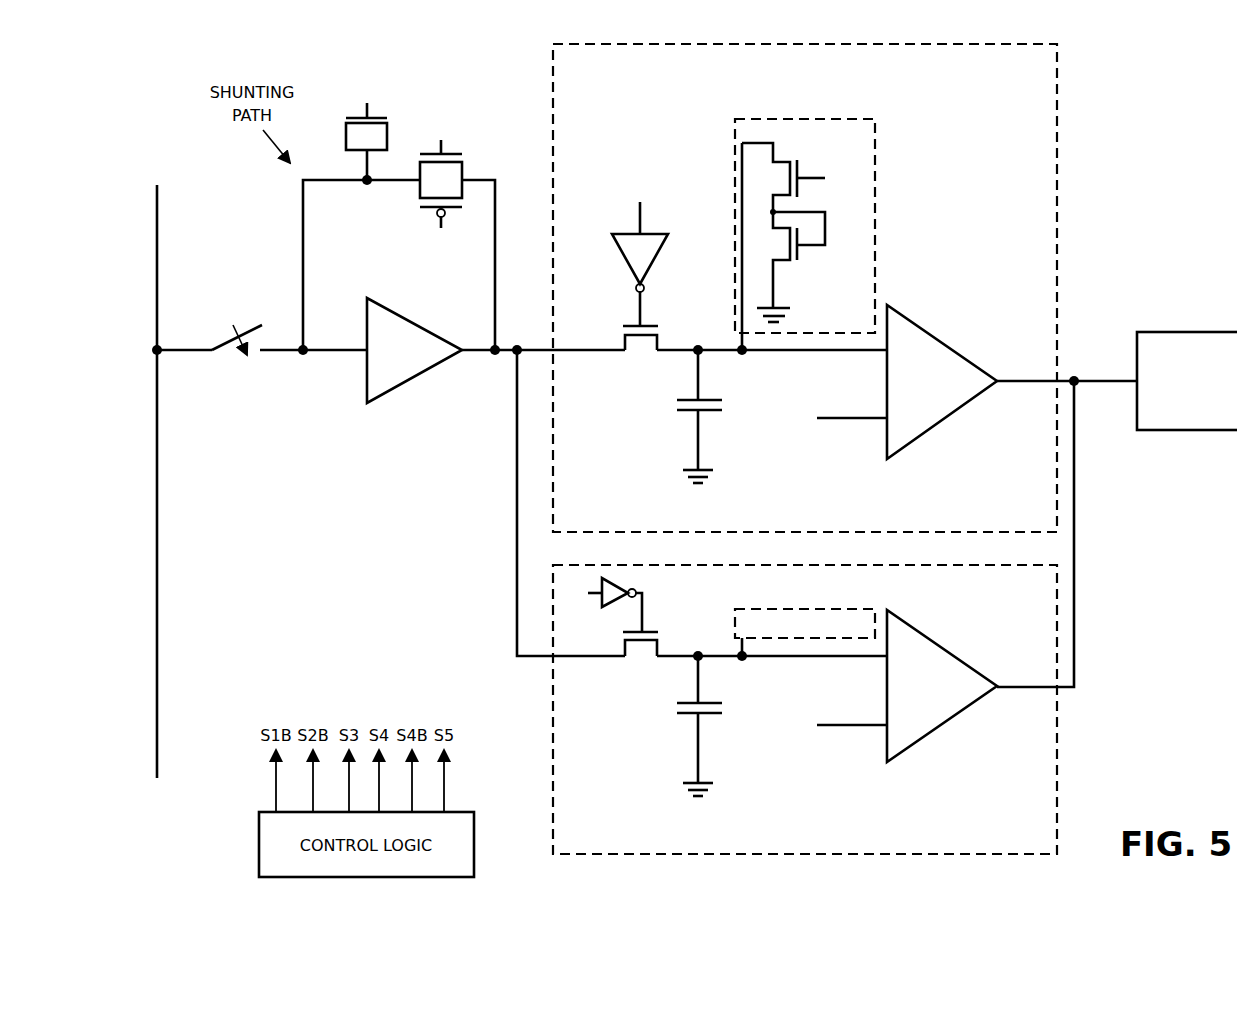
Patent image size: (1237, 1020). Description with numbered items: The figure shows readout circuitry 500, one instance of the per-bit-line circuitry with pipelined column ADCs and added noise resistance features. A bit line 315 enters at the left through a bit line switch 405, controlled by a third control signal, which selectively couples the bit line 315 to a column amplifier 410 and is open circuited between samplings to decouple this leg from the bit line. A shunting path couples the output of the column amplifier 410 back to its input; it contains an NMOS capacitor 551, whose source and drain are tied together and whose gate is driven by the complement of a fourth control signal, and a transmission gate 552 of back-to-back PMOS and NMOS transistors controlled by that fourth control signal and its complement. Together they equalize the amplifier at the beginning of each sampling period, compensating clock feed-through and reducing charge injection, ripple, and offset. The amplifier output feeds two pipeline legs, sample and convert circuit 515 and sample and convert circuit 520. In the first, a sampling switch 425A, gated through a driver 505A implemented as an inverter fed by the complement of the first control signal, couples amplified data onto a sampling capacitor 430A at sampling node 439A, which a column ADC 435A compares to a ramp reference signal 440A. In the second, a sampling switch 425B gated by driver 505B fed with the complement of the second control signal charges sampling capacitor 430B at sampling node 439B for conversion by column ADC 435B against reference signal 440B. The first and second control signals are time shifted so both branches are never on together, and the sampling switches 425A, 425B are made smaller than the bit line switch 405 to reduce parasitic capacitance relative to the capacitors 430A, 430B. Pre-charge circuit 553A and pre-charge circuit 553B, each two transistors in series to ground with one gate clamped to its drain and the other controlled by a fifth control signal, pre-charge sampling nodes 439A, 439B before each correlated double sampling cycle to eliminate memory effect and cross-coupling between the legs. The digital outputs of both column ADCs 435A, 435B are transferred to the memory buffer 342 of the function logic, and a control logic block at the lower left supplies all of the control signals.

The readout circuitry 500 is at (1157, 82).
The bit line 315 is at (168, 481).
The bit line switch 405 is at (233, 352).
The column amplifier 410 is at (410, 363).
The NMOS capacitor 551 is at (366, 133).
The transmission gate 552 is at (441, 184).
The sample and convert circuit 515 is at (805, 288).
The sample and convert circuit 520 is at (805, 709).
The driver 505A is at (625, 253).
The driver 505B is at (615, 603).
The sampling switch 425A is at (702, 352).
The sampling switch 425B is at (754, 655).
The sampling capacitor 430A is at (675, 414).
The sampling capacitor 430B is at (675, 723).
The sampling node 439A is at (760, 360).
The sampling node 439B is at (760, 667).
The reference signal 440A is at (838, 432).
The reference signal 440B is at (838, 734).
The column ADC 435A is at (977, 382).
The column ADC 435B is at (907, 686).
The pre-charge circuit 553A is at (880, 165).
The pre-charge circuit 553B is at (847, 604).
The memory buffer 342 is at (1187, 381).